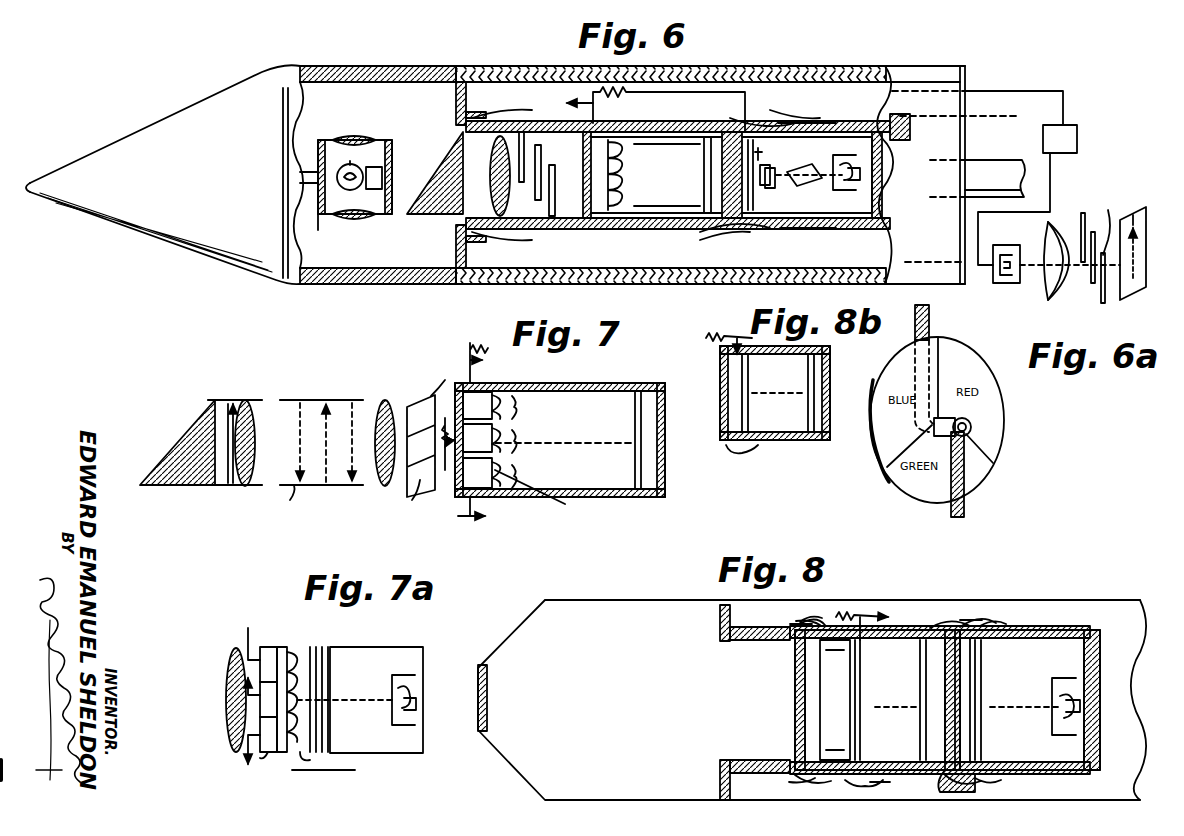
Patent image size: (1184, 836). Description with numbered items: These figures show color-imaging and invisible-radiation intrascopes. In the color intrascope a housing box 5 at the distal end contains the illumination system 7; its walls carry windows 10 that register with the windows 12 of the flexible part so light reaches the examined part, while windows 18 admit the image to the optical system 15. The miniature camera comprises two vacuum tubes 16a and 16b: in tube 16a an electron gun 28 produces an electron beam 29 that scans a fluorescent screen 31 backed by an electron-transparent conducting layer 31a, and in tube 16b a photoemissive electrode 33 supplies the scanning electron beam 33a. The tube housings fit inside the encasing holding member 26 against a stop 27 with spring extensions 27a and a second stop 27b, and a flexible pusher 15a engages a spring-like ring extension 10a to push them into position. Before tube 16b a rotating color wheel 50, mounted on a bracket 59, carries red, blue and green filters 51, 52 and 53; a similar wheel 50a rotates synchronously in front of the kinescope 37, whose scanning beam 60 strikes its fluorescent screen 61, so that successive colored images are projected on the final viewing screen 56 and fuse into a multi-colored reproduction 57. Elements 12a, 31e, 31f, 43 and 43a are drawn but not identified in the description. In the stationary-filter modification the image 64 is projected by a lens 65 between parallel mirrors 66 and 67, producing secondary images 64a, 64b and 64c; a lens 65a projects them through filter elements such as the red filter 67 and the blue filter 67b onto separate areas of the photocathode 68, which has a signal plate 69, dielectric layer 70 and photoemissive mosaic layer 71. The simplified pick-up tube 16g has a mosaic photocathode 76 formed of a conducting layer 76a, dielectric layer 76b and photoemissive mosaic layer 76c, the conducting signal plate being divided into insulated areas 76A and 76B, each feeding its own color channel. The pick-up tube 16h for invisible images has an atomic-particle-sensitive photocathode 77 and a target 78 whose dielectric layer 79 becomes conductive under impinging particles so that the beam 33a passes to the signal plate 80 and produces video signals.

In FIG. 6, the housing box 5 is at (385, 140).
In FIG. 6, the illumination system 7 is at (325, 218).
In FIG. 6, the windows 10 is at (350, 140).
In FIG. 6, the ring-like extension 10a is at (796, 118).
In FIG. 8, the ring-like extension 10a is at (809, 620).
In FIG. 6, the windows 12 is at (352, 66).
In FIG. 8, the end plate 12a is at (488, 700).
In FIG. 6, the optical system 15 is at (460, 136).
In FIG. 6, the flexible elastic guide 15a is at (975, 160).
In FIG. 6, the vacuum tube 16a is at (846, 142).
In FIG. 8, the vacuum tube 16a is at (1040, 652).
In FIG. 6, the vacuum tube 16b is at (627, 138).
In FIG. 7A, the pick-up tube 16g is at (411, 646).
In FIG. 8, the pick-up tube 16h is at (906, 646).
In FIG. 6, the windows 18 is at (439, 66).
In FIG. 8, the encasing holding member 26 is at (640, 602).
In FIG. 8, the stop 27 is at (720, 776).
In FIG. 6, the spring extensions 27a is at (831, 122).
In FIG. 8, the spring extensions 27a is at (831, 624).
In FIG. 6, the stop 27b is at (764, 120).
In FIG. 8, the stop 27b is at (981, 624).
In FIG. 6, the electron gun 28 is at (856, 202).
In FIG. 7A, the electron gun 28 is at (409, 680).
In FIG. 8, the electron gun 28 is at (1068, 670).
In FIG. 6, the electron beam 29 is at (789, 182).
In FIG. 7A, the electron beam 29 is at (346, 699).
In FIG. 8, the electron beam 29 is at (1004, 706).
In FIG. 6, the fluorescent screen 31 is at (765, 150).
In FIG. 6, the metallic conducting backing layer 31a is at (773, 165).
In FIG. 7A, the plate 31e is at (314, 646).
In FIG. 7A, the plate 31f is at (328, 646).
In FIG. 7, the photoemissive electrode 33 is at (644, 490).
In FIG. 8B, the photoemissive electrode 33 is at (812, 440).
In FIG. 8, the photoemissive electrode 33 is at (928, 650).
In FIG. 7, the scanning electron beam 33a is at (585, 444).
In FIG. 8B, the scanning electron beam 33a is at (765, 392).
In FIG. 8, the scanning electron beam 33a is at (890, 704).
In FIG. 6, the picture tube 37 is at (1002, 283).
In FIG. 6, the chamber 43 is at (823, 90).
In FIG. 6, the control box 43a is at (1080, 138).
In FIG. 6, the rotating color wheel 50 is at (543, 156).
In FIG. 6A, the rotating color wheel 50 is at (988, 464).
In FIG. 6, the color wheel 50a is at (1108, 219).
In FIG. 6A, the red filter 51 is at (992, 428).
In FIG. 6A, the blue filter 52 is at (897, 383).
In FIG. 6A, the green filter 53 is at (920, 492).
In FIG. 6, the final viewing screen 56 is at (1126, 293).
In FIG. 6, the multi-colored reproduction 57 is at (1138, 270).
In FIG. 6, the bracket 59 is at (558, 194).
In FIG. 6, the scanning beam 60 is at (1036, 264).
In FIG. 6, the fluorescent screen 61 is at (1090, 289).
In FIG. 7, the image 64 is at (214, 488).
In FIG. 7, the secondary image 64a is at (316, 399).
In FIG. 7, the secondary image 64b is at (330, 485).
In FIG. 7, the secondary image 64c is at (354, 485).
In FIG. 7, the lens 65 is at (242, 486).
In FIG. 7, the lens 65a is at (386, 398).
In FIG. 7, the mirror 66 is at (290, 399).
In FIG. 7, the mirror 67 is at (369, 446).
In FIG. 7, the blue filter 67b is at (468, 516).
In FIG. 7, the photocathode 68 is at (516, 441).
In FIG. 7, the signal plate 69 is at (460, 482).
In FIG. 7, the dielectric layer 70 is at (488, 396).
In FIG. 7, the photoemissive mosaic layer 71 is at (541, 497).
In FIG. 7A, the mosaic photocathode 76 is at (290, 642).
In FIG. 7A, the signal plate area 76A is at (259, 642).
In FIG. 7A, the signal plate area 76B is at (260, 720).
In FIG. 7A, the light transparent conducting layer 76a is at (268, 752).
In FIG. 7A, the light transparent dielectric layer 76b is at (290, 758).
In FIG. 7A, the photoemissive mosaic layer 76c is at (300, 774).
In FIG. 8, the photocathode 77 is at (800, 726).
In FIG. 8B, the target 78 is at (742, 458).
In FIG. 8, the target 78 is at (910, 787).
In FIG. 8B, the dielectric layer 79 is at (752, 380).
In FIG. 8, the dielectric layer 79 is at (865, 736).
In FIG. 8B, the signal plate 80 is at (735, 420).
In FIG. 8, the signal plate 80 is at (858, 740).